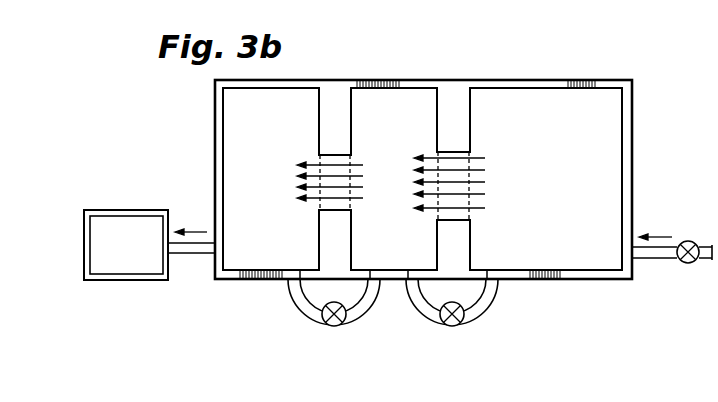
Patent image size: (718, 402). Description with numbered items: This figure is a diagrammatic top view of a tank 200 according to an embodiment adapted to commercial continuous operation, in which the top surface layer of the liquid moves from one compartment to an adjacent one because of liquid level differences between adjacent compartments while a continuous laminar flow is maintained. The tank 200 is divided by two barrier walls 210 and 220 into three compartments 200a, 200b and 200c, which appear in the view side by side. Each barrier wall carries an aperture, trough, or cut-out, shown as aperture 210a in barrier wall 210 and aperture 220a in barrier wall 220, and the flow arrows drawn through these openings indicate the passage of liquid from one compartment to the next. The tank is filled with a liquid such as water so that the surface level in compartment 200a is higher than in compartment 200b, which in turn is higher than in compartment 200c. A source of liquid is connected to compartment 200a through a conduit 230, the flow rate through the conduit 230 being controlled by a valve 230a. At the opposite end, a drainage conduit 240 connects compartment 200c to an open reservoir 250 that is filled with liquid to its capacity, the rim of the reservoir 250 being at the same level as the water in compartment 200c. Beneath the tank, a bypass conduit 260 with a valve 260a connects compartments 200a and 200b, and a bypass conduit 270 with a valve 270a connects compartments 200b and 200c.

The tank 200 is at (182, 101).
The compartment 200a is at (528, 117).
The compartment 200b is at (387, 247).
The compartment 200c is at (267, 117).
The barrier wall 210 is at (457, 97).
The aperture 210a is at (460, 194).
The barrier wall 220 is at (330, 100).
The aperture 220a is at (334, 195).
The conduit 230 is at (660, 253).
The valve 230a is at (688, 241).
The drainage conduit 240 is at (186, 256).
The open reservoir 250 is at (116, 235).
The bypass conduit 260 is at (480, 305).
The valve 260a is at (452, 326).
The bypass conduit 270 is at (293, 298).
The valve 270a is at (329, 324).